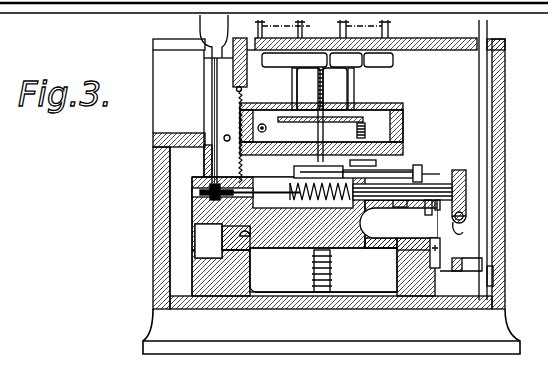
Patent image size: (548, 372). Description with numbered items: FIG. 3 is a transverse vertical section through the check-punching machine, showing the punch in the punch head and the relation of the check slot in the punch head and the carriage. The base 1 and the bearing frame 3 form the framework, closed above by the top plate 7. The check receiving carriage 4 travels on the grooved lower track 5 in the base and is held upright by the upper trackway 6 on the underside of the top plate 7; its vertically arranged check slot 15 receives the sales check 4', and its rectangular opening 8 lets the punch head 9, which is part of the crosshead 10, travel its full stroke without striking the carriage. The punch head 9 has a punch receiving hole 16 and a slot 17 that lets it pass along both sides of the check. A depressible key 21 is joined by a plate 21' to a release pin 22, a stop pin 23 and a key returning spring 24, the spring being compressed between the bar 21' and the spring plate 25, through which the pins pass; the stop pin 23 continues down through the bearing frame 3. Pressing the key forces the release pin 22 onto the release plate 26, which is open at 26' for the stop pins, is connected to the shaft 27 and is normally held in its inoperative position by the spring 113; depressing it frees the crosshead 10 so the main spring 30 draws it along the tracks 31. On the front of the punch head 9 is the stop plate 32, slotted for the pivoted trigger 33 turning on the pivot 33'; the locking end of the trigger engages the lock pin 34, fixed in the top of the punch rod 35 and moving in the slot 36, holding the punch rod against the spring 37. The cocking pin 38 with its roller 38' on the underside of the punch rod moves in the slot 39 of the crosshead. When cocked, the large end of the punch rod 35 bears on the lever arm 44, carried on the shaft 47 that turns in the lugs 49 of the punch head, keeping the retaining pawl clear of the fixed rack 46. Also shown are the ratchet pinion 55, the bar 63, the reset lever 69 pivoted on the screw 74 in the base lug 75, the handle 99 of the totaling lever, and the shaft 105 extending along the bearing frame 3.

The base 1 is at (366, 339).
The bearing frame 3 is at (405, 151).
The check receiving carriage 4 is at (174, 174).
The sales check 4' is at (192, 120).
The lower track 5 is at (202, 265).
The upper trackway 6 is at (242, 89).
The top plate 7 is at (437, 43).
The rectangular opening 8 is at (212, 178).
The punch head 9 is at (296, 196).
The crosshead 10 is at (345, 252).
The check slot 15 is at (217, 137).
The punch receiving hole 16 is at (201, 192).
The slot 17 is at (218, 183).
The depressible keys 21 is at (323, 28).
The plate 21' is at (327, 60).
The release pin 22 is at (296, 85).
The stop pin 23 is at (323, 132).
The key returning spring 24 is at (323, 85).
The spring plate 25 is at (394, 103).
The release plate 26 is at (334, 126).
The central opening of release plate 26' is at (321, 102).
The shaft 27 is at (266, 128).
The main spring 30 is at (313, 252).
The tracks 31 is at (251, 255).
The stop plate 32 is at (293, 171).
The trigger 33 is at (363, 165).
The pivot 33' is at (423, 133).
The lock pin 34 is at (425, 170).
The punch rod 35 is at (292, 186).
The slot 36 is at (425, 164).
The spring 37 is at (272, 252).
The cocking pin 38 is at (466, 234).
The roller 38' is at (416, 215).
The slot 39 is at (390, 208).
The lever arm 44 is at (466, 194).
The fixed rack 46 is at (400, 266).
The shaft 47 is at (463, 217).
The lugs 49 is at (441, 219).
The ratchet pinion 55 is at (182, 221).
The bar 63 is at (462, 262).
The reset lever 69 is at (479, 97).
The screw 74 is at (493, 272).
The base lug 75 is at (456, 265).
The handle 99 is at (213, 27).
The shaft 105 is at (218, 153).
The spring 113 is at (365, 131).